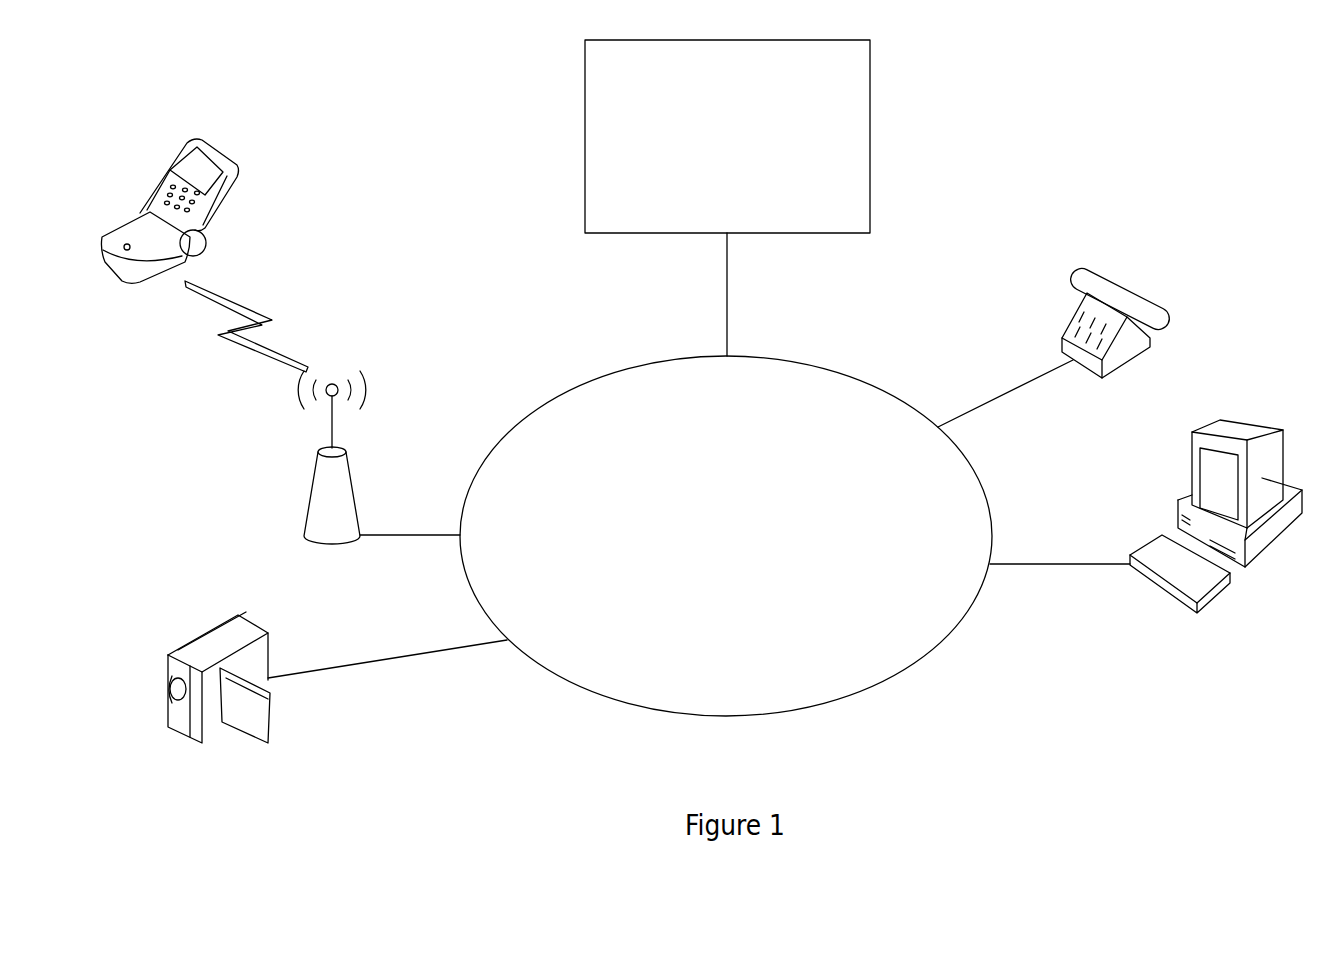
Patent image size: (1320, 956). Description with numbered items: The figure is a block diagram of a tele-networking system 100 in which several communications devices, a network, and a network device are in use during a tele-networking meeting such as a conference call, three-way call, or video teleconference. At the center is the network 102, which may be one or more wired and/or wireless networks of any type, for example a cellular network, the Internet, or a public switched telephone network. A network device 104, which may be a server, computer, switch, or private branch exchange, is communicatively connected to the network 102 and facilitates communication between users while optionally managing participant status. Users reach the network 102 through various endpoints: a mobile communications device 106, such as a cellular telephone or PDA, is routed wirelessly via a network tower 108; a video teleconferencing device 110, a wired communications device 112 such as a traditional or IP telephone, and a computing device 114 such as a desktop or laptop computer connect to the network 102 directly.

The tele-networking system 100 is at (945, 704).
The network 102 is at (726, 536).
The network device 104 is at (727, 198).
The mobile communications device 106 is at (204, 255).
The network tower 108 is at (379, 477).
The video teleconferencing device 110 is at (337, 698).
The wired communications device 112 is at (1055, 346).
The computing device 114 is at (1146, 531).